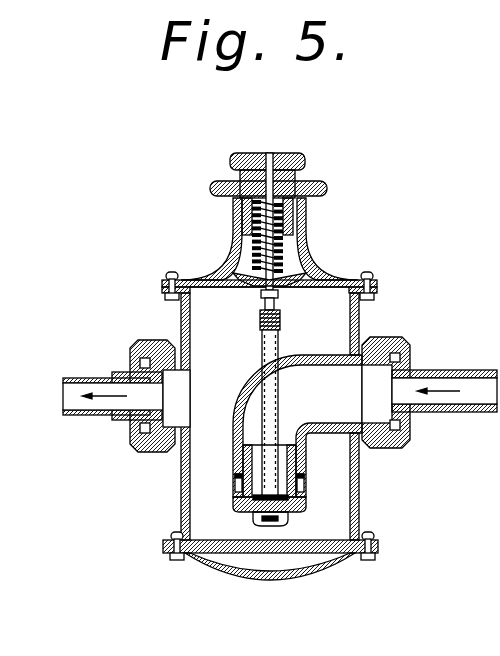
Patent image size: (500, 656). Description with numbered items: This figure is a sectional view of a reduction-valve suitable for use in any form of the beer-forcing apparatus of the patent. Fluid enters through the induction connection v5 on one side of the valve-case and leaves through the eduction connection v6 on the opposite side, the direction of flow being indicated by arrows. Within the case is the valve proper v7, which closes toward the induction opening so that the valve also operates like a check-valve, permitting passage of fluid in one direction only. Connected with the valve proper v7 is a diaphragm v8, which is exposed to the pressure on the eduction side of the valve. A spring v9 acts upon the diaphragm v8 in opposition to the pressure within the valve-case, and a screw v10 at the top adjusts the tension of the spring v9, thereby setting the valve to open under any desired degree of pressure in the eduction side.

The induction connection v5 is at (420, 392).
The eduction connection v6 is at (126, 396).
The valve proper v7 is at (254, 514).
The diaphragm v8 is at (305, 288).
The spring v9 is at (245, 265).
The screw v10 is at (305, 164).